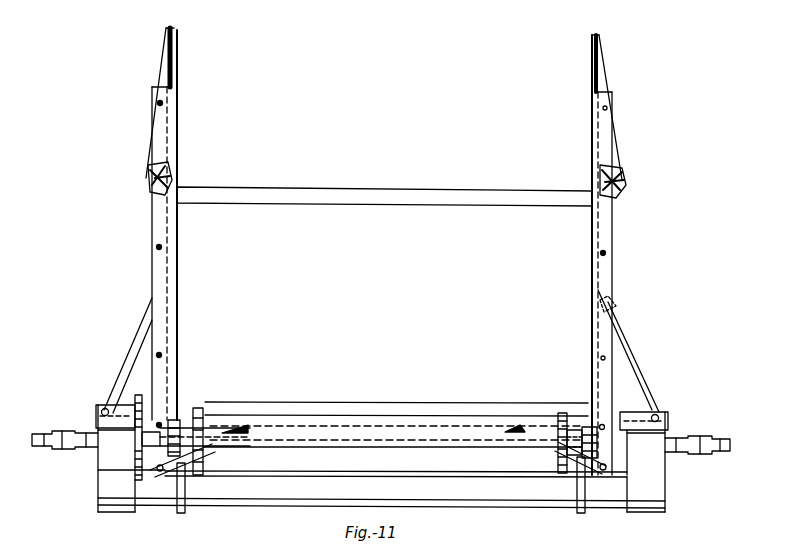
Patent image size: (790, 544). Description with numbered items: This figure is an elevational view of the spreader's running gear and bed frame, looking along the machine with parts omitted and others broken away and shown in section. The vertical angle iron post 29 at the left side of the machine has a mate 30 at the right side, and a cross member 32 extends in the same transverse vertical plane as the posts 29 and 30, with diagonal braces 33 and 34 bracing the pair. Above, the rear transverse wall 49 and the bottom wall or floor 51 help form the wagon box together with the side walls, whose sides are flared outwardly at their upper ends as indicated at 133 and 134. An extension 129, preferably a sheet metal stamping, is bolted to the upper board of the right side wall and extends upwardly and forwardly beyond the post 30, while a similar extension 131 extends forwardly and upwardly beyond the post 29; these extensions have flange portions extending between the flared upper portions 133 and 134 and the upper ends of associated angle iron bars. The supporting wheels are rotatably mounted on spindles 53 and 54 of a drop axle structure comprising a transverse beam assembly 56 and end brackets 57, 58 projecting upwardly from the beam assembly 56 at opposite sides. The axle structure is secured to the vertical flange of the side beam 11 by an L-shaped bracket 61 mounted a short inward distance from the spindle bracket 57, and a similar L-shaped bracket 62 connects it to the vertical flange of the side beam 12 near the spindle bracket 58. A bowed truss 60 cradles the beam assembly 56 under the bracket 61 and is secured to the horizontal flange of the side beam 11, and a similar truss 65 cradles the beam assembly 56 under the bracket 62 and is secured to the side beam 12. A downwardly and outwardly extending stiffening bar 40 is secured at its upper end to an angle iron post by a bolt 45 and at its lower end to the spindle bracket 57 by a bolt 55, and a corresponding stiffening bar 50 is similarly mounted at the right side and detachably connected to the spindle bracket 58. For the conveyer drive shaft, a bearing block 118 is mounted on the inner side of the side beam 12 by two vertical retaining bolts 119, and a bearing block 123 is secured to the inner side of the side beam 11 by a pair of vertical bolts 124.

The side beam 11 is at (584, 428).
The side beam 12 is at (198, 410).
The angle iron post 29 is at (610, 266).
The angle iron post 30 is at (152, 270).
The cross member 32 is at (393, 415).
The diagonal brace 33 is at (556, 448).
The diagonal brace 34 is at (210, 448).
The stiffening bar 40 is at (640, 380).
The bolt 45 is at (618, 310).
The rear transverse wall 49 is at (453, 212).
The stiffening bar 50 is at (131, 354).
The bottom wall 51 is at (455, 417).
The wheel spindle 53 is at (698, 453).
The wheel spindle 54 is at (70, 450).
The bolt 55 is at (659, 410).
The transverse beam assembly 56 is at (447, 503).
The end bracket 57 is at (667, 490).
The end bracket 58 is at (98, 494).
The bowed truss 60 is at (583, 510).
The L-shaped bracket 61 is at (567, 478).
The L-shaped bracket 62 is at (200, 478).
The truss 65 is at (180, 506).
The bearing block 118 is at (156, 472).
The retaining bolts 119 is at (178, 420).
The bearing block 123 is at (604, 426).
The vertical bolts 124 is at (588, 426).
The extension 129 is at (163, 63).
The extension 131 is at (606, 78).
The flared upper portion 133 is at (620, 186).
The flared upper portion 134 is at (150, 182).